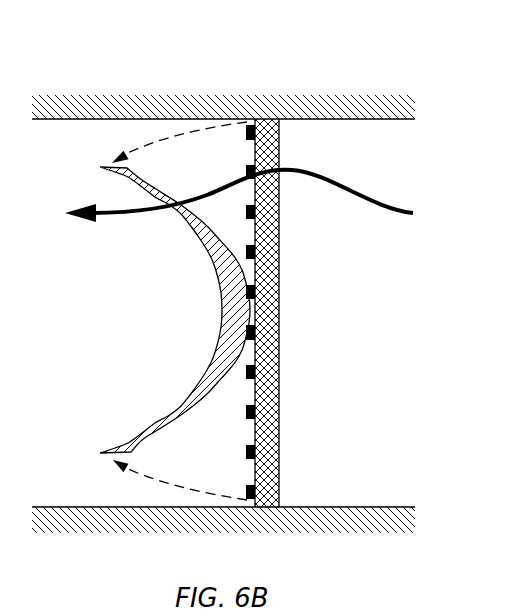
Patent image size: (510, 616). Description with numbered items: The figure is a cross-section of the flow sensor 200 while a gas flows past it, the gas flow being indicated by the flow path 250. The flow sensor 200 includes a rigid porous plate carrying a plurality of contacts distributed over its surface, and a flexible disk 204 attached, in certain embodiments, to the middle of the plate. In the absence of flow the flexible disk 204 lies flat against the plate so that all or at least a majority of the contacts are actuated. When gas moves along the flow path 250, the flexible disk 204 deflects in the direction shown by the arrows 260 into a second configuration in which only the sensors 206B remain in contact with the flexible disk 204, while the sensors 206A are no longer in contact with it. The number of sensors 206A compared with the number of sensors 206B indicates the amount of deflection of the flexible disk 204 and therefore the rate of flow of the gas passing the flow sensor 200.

The flow sensor 200 is at (155, 38).
The flexible disk 204 is at (218, 377).
The sensors not in contact with the disk 206A is at (258, 134).
The sensors in contact with the disk 206B is at (256, 292).
The flow path 250 is at (390, 214).
The arrows 260 is at (215, 112).